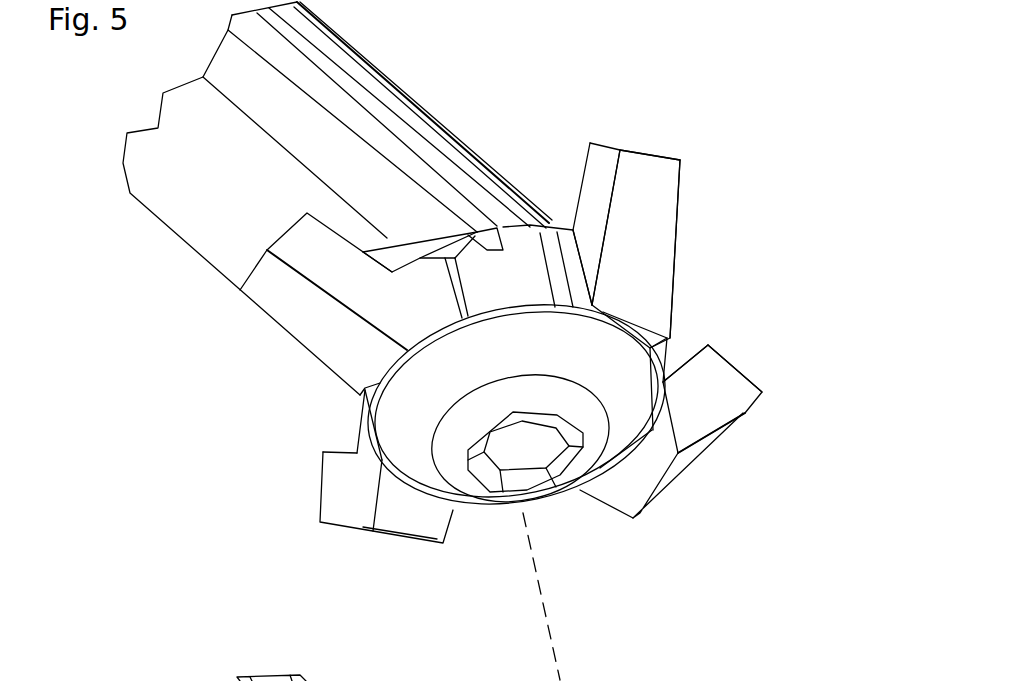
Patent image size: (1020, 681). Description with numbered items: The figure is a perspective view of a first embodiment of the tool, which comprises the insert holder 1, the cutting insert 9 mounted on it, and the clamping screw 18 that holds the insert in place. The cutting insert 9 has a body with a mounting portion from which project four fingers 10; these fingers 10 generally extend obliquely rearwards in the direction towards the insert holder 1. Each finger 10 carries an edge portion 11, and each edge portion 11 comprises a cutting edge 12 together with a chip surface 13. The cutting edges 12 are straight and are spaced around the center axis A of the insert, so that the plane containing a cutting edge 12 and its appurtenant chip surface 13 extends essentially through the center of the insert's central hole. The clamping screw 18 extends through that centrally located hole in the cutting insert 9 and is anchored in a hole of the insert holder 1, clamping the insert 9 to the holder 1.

The insert holder 1 is at (437, 92).
The cutting insert 9 is at (468, 540).
The fingers 10 is at (683, 298).
The edge portion 11 is at (603, 128).
The cutting edge 12 is at (610, 141).
The chip surface 13 is at (597, 188).
The clamping screw 18 is at (525, 433).
The center axis A is at (553, 641).